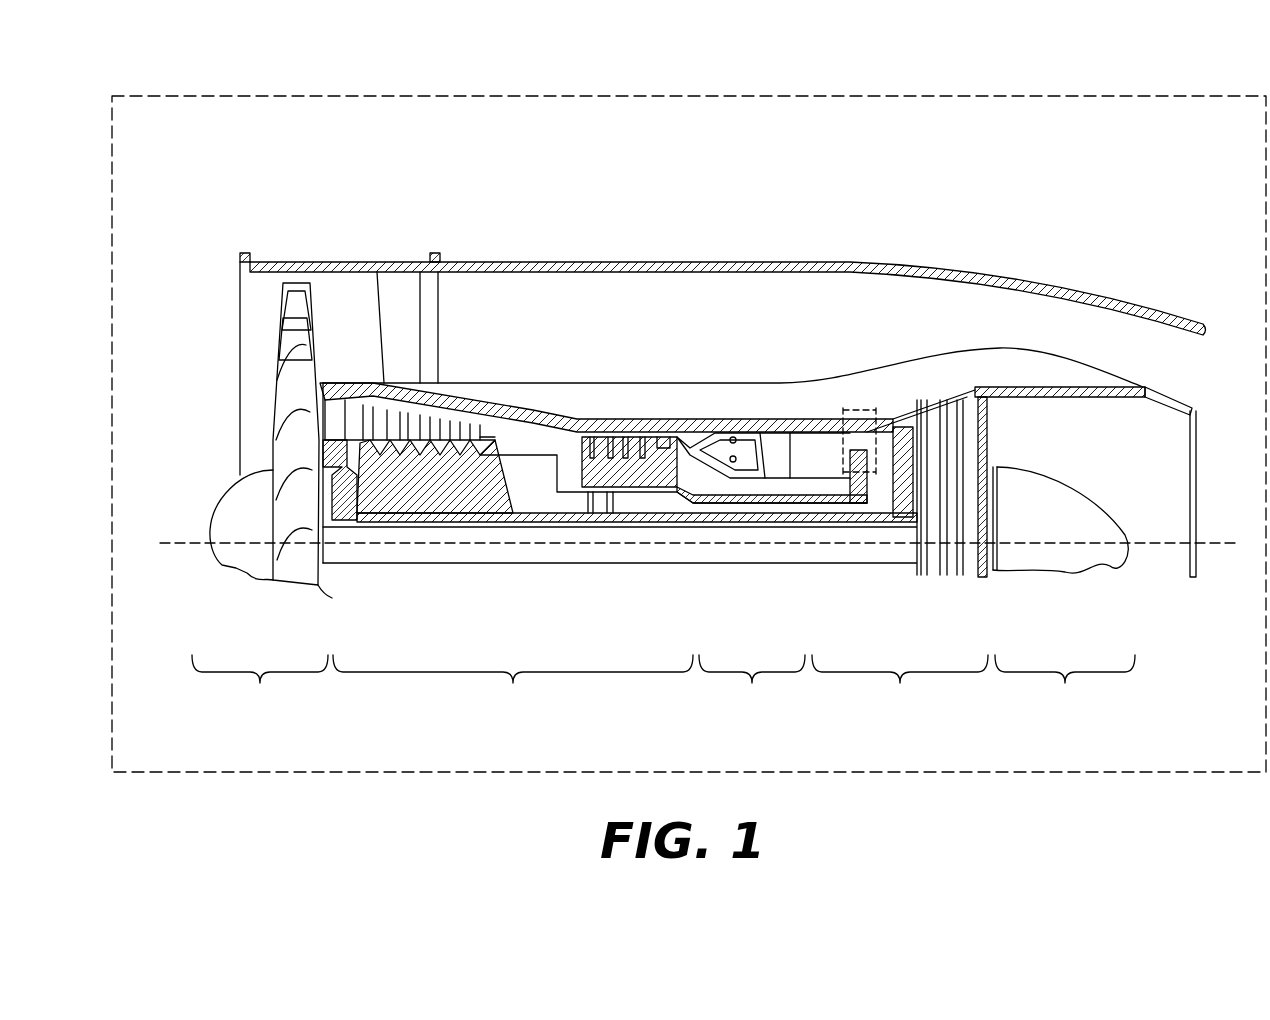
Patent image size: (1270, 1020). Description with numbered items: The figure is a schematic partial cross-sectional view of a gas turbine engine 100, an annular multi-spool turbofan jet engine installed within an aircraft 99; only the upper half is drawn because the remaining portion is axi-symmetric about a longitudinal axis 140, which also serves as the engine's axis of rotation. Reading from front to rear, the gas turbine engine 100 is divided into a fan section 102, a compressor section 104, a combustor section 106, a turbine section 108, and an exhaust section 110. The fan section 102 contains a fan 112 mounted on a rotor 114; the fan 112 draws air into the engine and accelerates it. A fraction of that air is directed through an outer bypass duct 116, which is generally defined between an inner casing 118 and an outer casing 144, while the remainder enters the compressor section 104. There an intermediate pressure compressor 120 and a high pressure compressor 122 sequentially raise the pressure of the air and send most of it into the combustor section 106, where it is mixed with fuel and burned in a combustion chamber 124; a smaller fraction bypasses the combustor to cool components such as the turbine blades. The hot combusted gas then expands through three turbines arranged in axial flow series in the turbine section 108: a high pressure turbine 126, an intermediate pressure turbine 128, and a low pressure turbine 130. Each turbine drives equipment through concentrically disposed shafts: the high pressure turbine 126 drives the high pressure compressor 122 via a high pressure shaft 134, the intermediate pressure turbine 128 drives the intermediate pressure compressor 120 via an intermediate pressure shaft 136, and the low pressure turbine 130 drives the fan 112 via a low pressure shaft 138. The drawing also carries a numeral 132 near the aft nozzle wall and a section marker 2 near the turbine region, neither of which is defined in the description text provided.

The aircraft 99 is at (1133, 97).
The gas turbine engine 100 is at (467, 210).
The fan section 102 is at (260, 685).
The compressor section 104 is at (513, 685).
The combustor section 106 is at (752, 685).
The turbine section 108 is at (900, 685).
The exhaust section 110 is at (1065, 685).
The fan 112 is at (288, 385).
The rotor 114 is at (330, 590).
The outer bypass duct 116 is at (618, 292).
The inner casing 118 is at (512, 387).
The intermediate pressure compressor 120 is at (437, 512).
The high pressure compressor 122 is at (633, 488).
The combustion chamber 124 is at (816, 425).
The high pressure turbine 126 is at (855, 440).
The intermediate pressure turbine 128 is at (915, 430).
The low pressure turbine 130 is at (980, 396).
The exhaust nozzle 132 is at (1182, 485).
The high pressure shaft 134 is at (722, 505).
The intermediate pressure shaft 136 is at (800, 523).
The low pressure shaft 138 is at (897, 553).
The longitudinal axis 140 is at (176, 532).
The outer casing 144 is at (712, 262).
The section line 2 is at (884, 414).